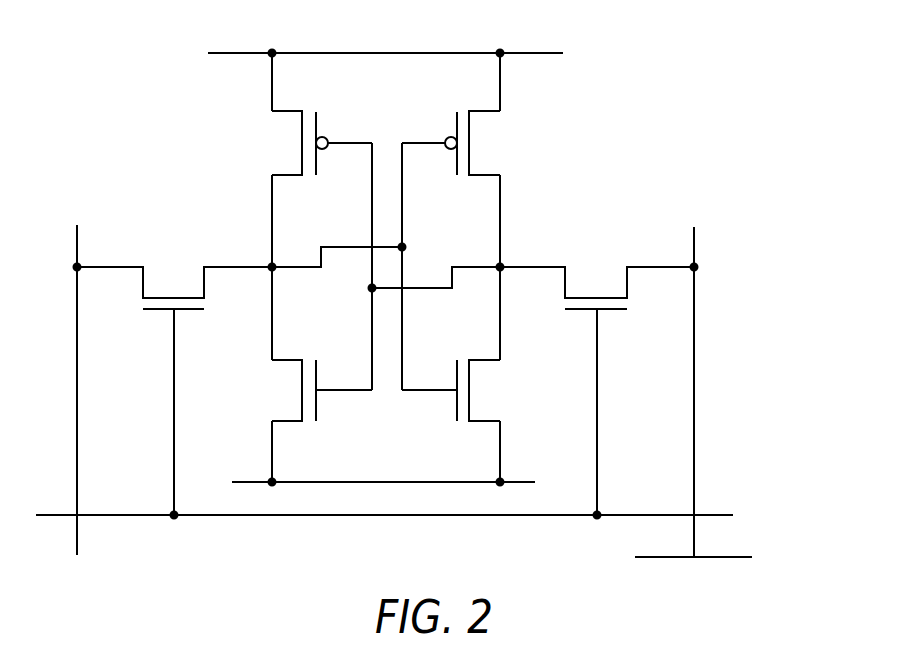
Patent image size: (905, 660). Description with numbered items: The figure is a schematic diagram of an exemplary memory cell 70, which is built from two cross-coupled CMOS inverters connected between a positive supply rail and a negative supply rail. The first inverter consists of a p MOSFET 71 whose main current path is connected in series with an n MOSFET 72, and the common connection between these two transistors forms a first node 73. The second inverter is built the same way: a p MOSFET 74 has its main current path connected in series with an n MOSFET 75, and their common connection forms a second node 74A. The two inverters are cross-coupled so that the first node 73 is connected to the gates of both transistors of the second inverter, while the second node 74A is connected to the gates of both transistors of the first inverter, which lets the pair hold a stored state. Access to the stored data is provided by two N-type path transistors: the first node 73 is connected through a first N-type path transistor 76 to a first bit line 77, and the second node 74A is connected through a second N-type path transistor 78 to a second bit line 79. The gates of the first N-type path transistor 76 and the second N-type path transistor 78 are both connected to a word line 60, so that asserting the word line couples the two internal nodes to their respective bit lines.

The word line 60 is at (712, 515).
The memory cell 70 is at (160, 130).
The p MOSFET 71 is at (317, 127).
The n MOSFET 72 is at (317, 373).
The first node 73 is at (270, 265).
The p MOSFET 74 is at (456, 127).
The second node 74A is at (501, 265).
The n MOSFET 75 is at (456, 373).
The first N-type path transistor 76 is at (188, 312).
The first bit line 77 is at (76, 247).
The second N-type path transistor 78 is at (582, 312).
The second bit line 79 is at (695, 249).